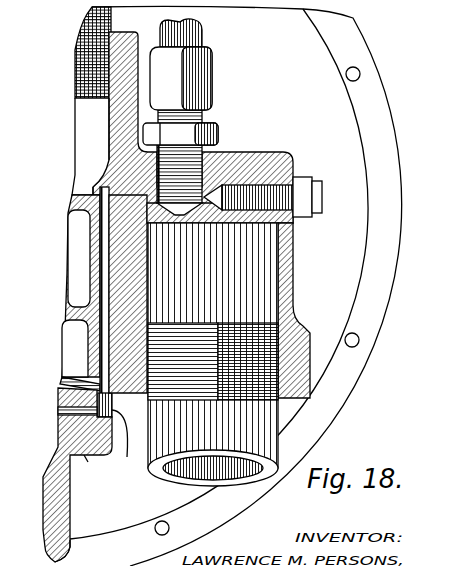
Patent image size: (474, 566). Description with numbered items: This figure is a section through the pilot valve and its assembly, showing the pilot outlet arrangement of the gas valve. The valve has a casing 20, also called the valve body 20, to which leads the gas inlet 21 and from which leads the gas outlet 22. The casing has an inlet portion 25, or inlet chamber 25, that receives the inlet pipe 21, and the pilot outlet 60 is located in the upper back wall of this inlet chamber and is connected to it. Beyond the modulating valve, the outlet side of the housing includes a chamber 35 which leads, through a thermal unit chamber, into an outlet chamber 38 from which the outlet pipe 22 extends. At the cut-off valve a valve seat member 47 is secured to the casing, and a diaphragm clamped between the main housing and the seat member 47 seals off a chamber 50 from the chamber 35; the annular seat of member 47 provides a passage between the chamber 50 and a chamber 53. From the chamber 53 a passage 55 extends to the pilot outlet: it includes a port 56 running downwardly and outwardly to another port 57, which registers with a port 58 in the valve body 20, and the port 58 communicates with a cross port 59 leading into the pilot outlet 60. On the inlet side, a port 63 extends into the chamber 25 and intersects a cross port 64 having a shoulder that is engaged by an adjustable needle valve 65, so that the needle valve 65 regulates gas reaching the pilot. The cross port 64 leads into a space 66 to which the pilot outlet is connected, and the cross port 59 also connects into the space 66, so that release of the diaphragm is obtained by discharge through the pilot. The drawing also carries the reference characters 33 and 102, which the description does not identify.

The casing 20 is at (353, 43).
The gas inlet 21 is at (260, 421).
The gas outlet 22 is at (88, 18).
The inlet portion 25 is at (273, 294).
The recess 33 is at (70, 243).
The chamber 35 is at (76, 336).
The outlet chamber 38 is at (90, 119).
The valve seat member 47 is at (124, 447).
The chamber 50 is at (50, 470).
The chamber 53 is at (86, 458).
The passage 55 is at (97, 348).
The port 56 is at (57, 378).
The port 57 is at (112, 406).
The port 58 is at (97, 280).
The cross port 59 is at (123, 183).
The pilot outlet 60 is at (200, 37).
The port 63 is at (240, 222).
The cross port 64 is at (212, 188).
The adjustable needle valve 65 is at (316, 192).
The space 66 is at (184, 206).
The bottom lip 102 is at (68, 552).